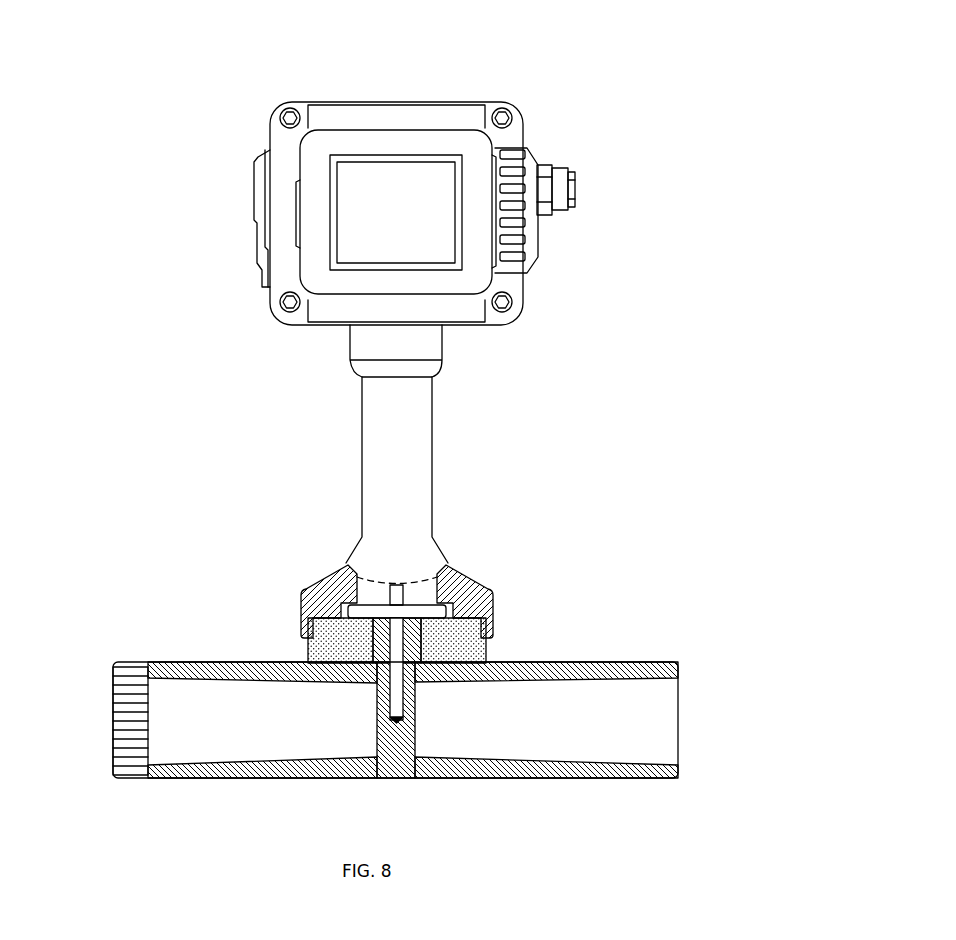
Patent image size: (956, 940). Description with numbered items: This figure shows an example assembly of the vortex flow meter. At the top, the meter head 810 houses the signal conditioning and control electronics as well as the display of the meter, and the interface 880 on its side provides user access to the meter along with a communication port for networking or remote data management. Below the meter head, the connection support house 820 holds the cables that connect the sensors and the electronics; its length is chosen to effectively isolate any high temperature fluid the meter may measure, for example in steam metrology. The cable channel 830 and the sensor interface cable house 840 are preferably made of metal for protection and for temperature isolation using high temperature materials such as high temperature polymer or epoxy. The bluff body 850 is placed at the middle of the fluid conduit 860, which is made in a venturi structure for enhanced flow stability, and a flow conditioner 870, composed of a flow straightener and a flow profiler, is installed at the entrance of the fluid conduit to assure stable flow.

The meter head 810 is at (318, 180).
The connection support house 820 is at (388, 465).
The cable channel 830 is at (402, 587).
The sensor interface cable house 840 is at (478, 587).
The bluff body 850 is at (417, 730).
The fluid conduit 860 is at (263, 715).
The flow conditioner 870 is at (130, 722).
The interface 880 is at (572, 172).